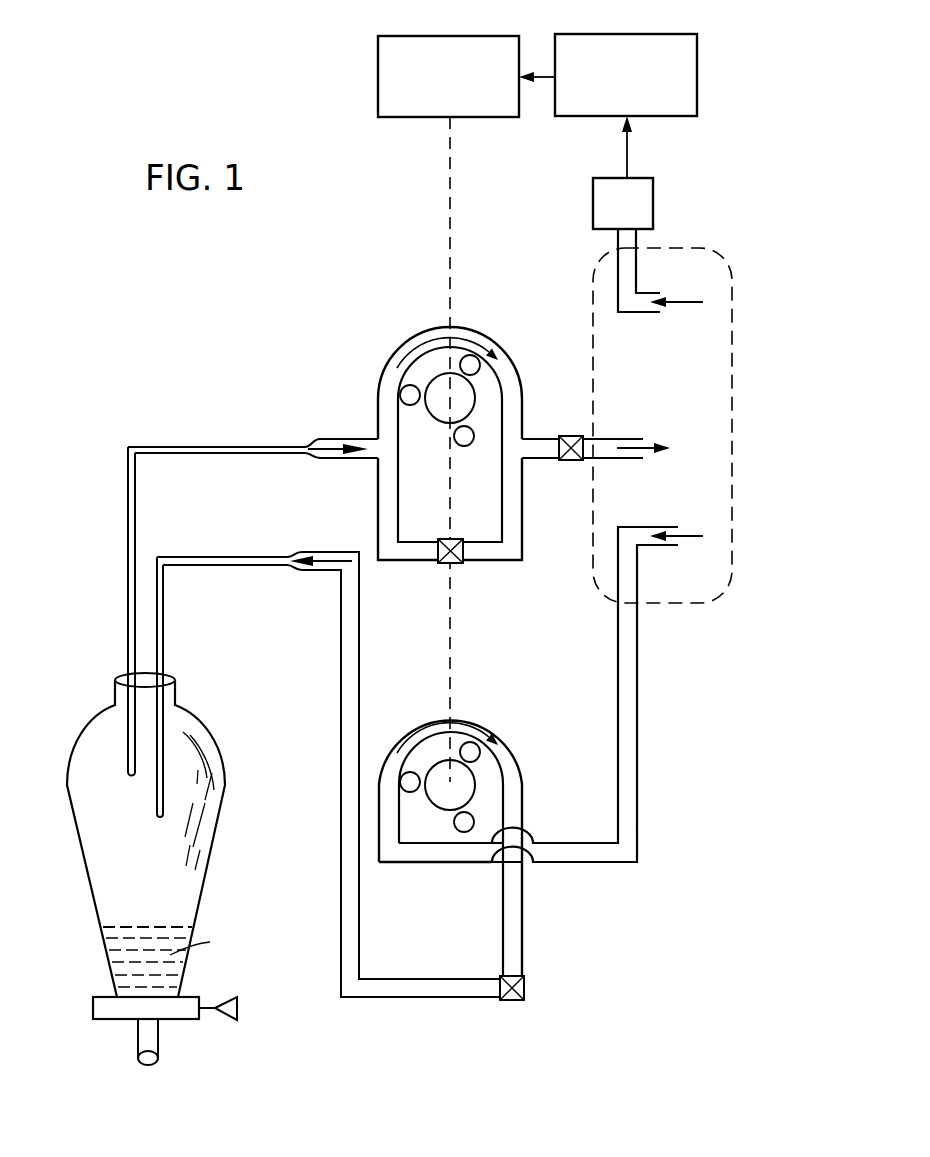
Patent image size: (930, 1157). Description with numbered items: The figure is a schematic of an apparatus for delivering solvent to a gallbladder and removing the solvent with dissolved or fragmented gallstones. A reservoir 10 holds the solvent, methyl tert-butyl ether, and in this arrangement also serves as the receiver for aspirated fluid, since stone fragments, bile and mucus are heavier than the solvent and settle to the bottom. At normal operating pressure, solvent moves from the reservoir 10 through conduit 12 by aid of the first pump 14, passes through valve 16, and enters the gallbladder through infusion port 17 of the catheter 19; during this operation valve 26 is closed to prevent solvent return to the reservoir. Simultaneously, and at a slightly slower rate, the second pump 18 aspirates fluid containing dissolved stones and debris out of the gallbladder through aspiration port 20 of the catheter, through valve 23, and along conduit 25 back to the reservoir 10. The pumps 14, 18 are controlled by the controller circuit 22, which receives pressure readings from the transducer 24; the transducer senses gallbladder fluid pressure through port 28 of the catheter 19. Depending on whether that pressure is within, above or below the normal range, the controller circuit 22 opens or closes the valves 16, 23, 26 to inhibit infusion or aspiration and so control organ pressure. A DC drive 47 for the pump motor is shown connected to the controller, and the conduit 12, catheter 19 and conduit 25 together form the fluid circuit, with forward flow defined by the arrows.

The reservoir 10 is at (212, 709).
The conduit 12 is at (162, 447).
The first pump 14 is at (438, 413).
The valve 16 is at (570, 436).
The infusion port 17 is at (618, 438).
The second pump 18 is at (440, 796).
The catheter 19 is at (594, 285).
The aspiration port 20 is at (644, 547).
The controller circuit 22 is at (675, 34).
The valve 23 is at (512, 1000).
The transducer 24 is at (637, 178).
The conduit 25 is at (637, 722).
The valve 26 is at (440, 563).
The port 28 is at (656, 293).
The DC drive 47 is at (418, 36).